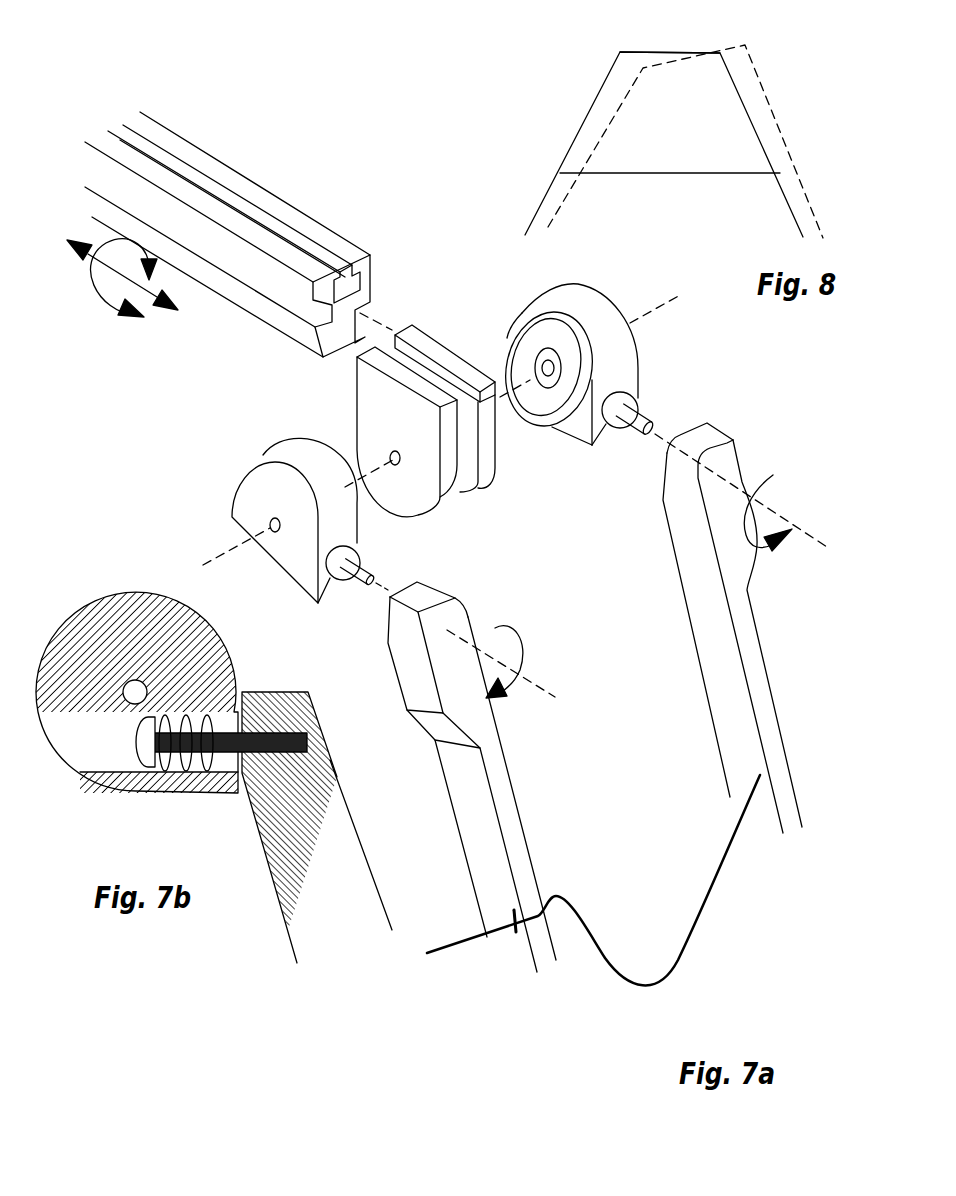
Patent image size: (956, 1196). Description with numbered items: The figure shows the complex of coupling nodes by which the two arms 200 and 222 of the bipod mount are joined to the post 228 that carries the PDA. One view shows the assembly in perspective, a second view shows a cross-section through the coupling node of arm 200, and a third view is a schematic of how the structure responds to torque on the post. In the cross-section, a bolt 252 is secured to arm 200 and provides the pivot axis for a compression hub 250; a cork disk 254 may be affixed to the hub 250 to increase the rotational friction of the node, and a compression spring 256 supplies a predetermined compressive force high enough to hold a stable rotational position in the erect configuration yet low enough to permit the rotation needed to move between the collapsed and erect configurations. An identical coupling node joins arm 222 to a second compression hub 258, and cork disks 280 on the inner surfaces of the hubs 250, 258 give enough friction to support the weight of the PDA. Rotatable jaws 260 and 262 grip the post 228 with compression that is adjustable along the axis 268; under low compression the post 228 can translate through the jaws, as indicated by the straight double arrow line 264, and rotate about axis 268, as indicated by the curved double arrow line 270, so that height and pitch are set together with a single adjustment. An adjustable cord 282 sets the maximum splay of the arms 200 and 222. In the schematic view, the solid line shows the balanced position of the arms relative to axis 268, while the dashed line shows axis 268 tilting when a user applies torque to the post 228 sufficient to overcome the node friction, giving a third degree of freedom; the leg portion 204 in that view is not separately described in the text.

In FIG. 7A, the arm 200 is at (502, 790).
In FIG. 7B, the arm 200 is at (345, 840).
In FIG. 8, the arm 200 is at (590, 110).
In FIG. 8, the second arm 204 is at (780, 195).
In FIG. 7A, the arm 222 is at (723, 697).
In FIG. 7A, the post 228 is at (322, 233).
In FIG. 7A, the compression hub 250 is at (252, 459).
In FIG. 7B, the compression hub 250 is at (112, 623).
In FIG. 7A, the bolt 252 is at (364, 592).
In FIG. 7B, the bolt 252 is at (293, 690).
In FIG. 7B, the cork disk 254 is at (238, 692).
In FIG. 7B, the compression spring 256 is at (190, 788).
In FIG. 7A, the compression hub 258 is at (562, 310).
In FIG. 7A, the rotatable jaw 260 is at (418, 490).
In FIG. 7A, the rotatable jaw 262 is at (485, 447).
In FIG. 7A, the straight double arrow line 264 is at (187, 317).
In FIG. 7A, the axis 268 is at (210, 552).
In FIG. 8, the axis 268 is at (648, 53).
In FIG. 7A, the curved double arrow line 270 is at (128, 322).
In FIG. 7A, the cork disk 280 is at (517, 338).
In FIG. 7A, the adjustable cord 282 is at (708, 907).
In FIG. 8, the adjustable cord 282 is at (650, 173).